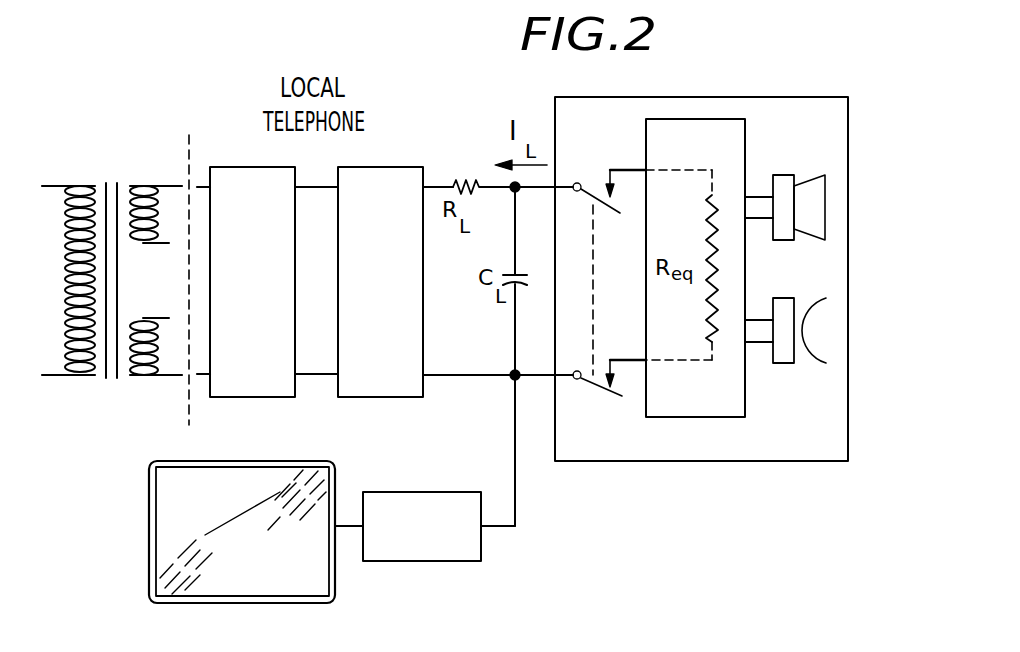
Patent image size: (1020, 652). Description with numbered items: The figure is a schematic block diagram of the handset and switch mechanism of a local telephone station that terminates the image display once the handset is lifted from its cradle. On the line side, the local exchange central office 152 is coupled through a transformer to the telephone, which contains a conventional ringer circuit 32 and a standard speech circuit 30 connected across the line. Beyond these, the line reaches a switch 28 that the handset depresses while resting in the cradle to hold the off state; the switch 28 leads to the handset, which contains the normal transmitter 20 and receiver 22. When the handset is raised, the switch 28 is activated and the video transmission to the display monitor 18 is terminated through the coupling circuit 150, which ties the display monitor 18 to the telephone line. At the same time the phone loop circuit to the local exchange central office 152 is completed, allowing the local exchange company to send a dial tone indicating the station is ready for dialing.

The local exchange central office 152 is at (122, 167).
The ringer circuit 32 is at (232, 166).
The speech circuit 30 is at (378, 166).
The switch 28 is at (598, 383).
The receiver 22 is at (790, 175).
The transmitter 20 is at (783, 363).
The display monitor 18 is at (149, 510).
The coupling circuit 150 is at (400, 492).